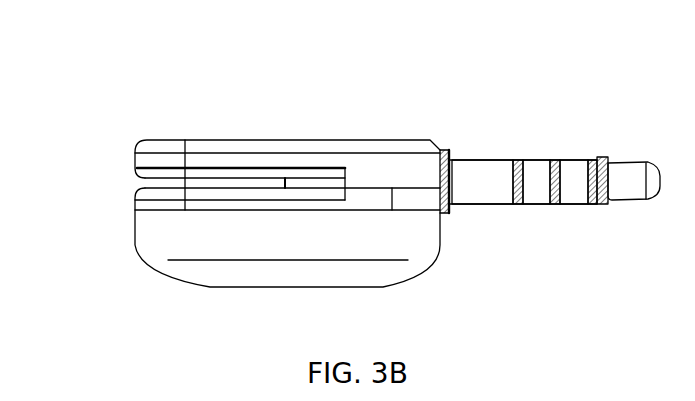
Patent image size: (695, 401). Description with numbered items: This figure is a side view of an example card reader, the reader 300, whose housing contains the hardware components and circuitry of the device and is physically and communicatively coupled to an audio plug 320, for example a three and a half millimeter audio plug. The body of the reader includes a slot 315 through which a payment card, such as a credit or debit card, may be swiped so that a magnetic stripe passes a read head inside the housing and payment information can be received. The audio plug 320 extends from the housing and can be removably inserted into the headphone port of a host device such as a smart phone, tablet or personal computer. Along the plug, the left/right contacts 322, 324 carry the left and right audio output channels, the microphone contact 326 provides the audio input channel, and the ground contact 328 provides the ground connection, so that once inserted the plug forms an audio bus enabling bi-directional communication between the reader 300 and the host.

The reader 300 is at (178, 76).
The slot 315 is at (133, 178).
The audio plug 320 is at (670, 100).
The left/right contact 322 is at (637, 185).
The left/right contact 324 is at (573, 175).
The microphone contact 326 is at (478, 192).
The ground contact 328 is at (538, 197).